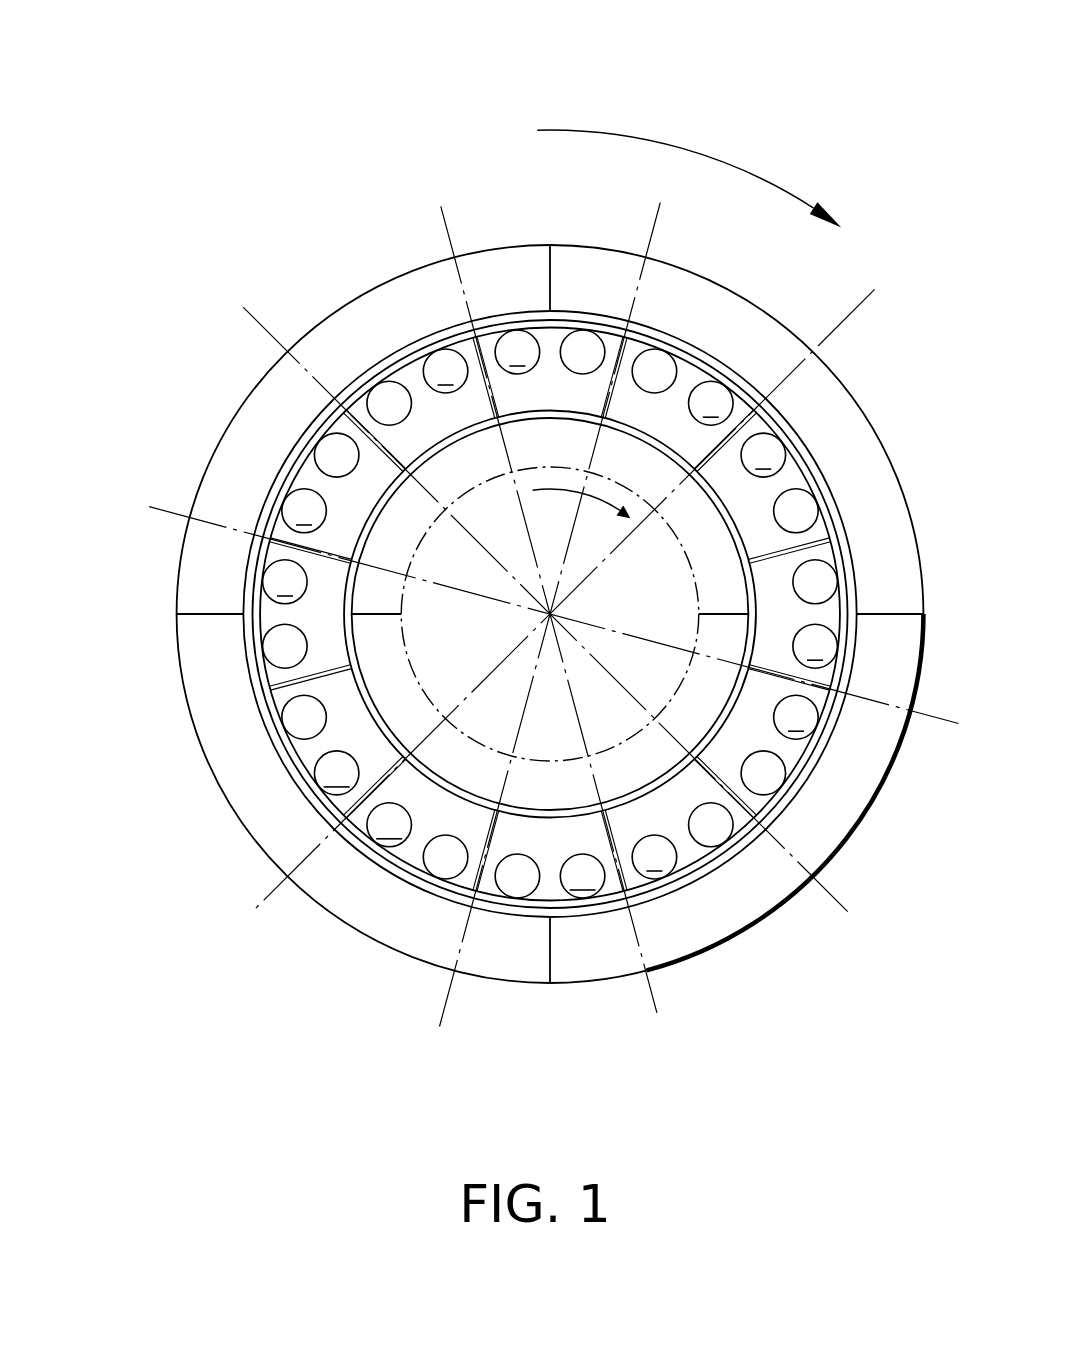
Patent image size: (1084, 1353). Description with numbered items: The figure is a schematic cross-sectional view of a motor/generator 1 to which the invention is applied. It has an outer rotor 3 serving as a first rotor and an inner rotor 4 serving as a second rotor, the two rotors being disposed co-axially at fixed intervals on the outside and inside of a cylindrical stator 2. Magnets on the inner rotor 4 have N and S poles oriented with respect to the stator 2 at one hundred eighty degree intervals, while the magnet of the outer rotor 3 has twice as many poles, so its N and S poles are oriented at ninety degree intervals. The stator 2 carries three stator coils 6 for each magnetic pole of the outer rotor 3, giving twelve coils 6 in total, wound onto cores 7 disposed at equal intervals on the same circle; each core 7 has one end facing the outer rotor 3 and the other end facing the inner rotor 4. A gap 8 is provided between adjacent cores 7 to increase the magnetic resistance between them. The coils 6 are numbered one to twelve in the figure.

The motor/generator 1 is at (521, 535).
The stator 2 is at (550, 613).
The outer rotor 3 is at (550, 537).
The inner rotor 4 is at (550, 620).
The stator coil 6 is at (503, 614).
The core 7 is at (480, 614).
The gap 8 is at (462, 614).